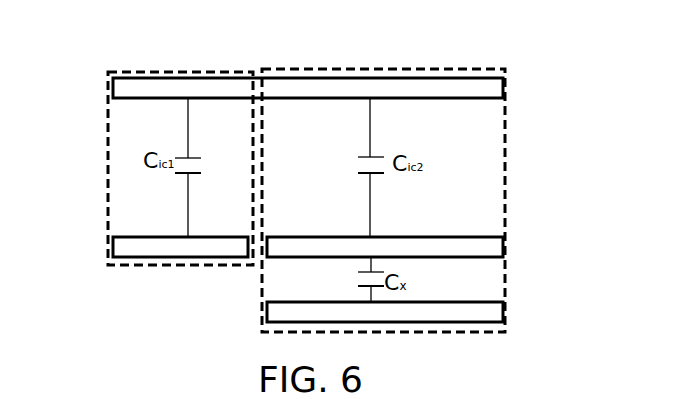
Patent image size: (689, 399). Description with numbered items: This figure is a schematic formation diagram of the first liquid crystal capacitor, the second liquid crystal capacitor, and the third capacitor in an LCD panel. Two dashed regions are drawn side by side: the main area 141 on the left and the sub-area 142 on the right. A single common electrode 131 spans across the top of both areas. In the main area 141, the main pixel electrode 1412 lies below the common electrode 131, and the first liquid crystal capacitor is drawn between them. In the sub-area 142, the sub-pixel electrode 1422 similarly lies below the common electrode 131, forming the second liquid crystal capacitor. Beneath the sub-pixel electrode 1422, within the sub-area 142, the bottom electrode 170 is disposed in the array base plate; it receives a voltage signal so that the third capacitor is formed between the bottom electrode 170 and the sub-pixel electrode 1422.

The common top electrode / touch electrode 131 is at (402, 88).
The main area 141 is at (100, 66).
The sub-area 142 is at (507, 143).
The main pixel electrode 1412 is at (118, 245).
The sub-pixel electrode 1422 is at (497, 250).
The bottom electrode 170 is at (487, 311).